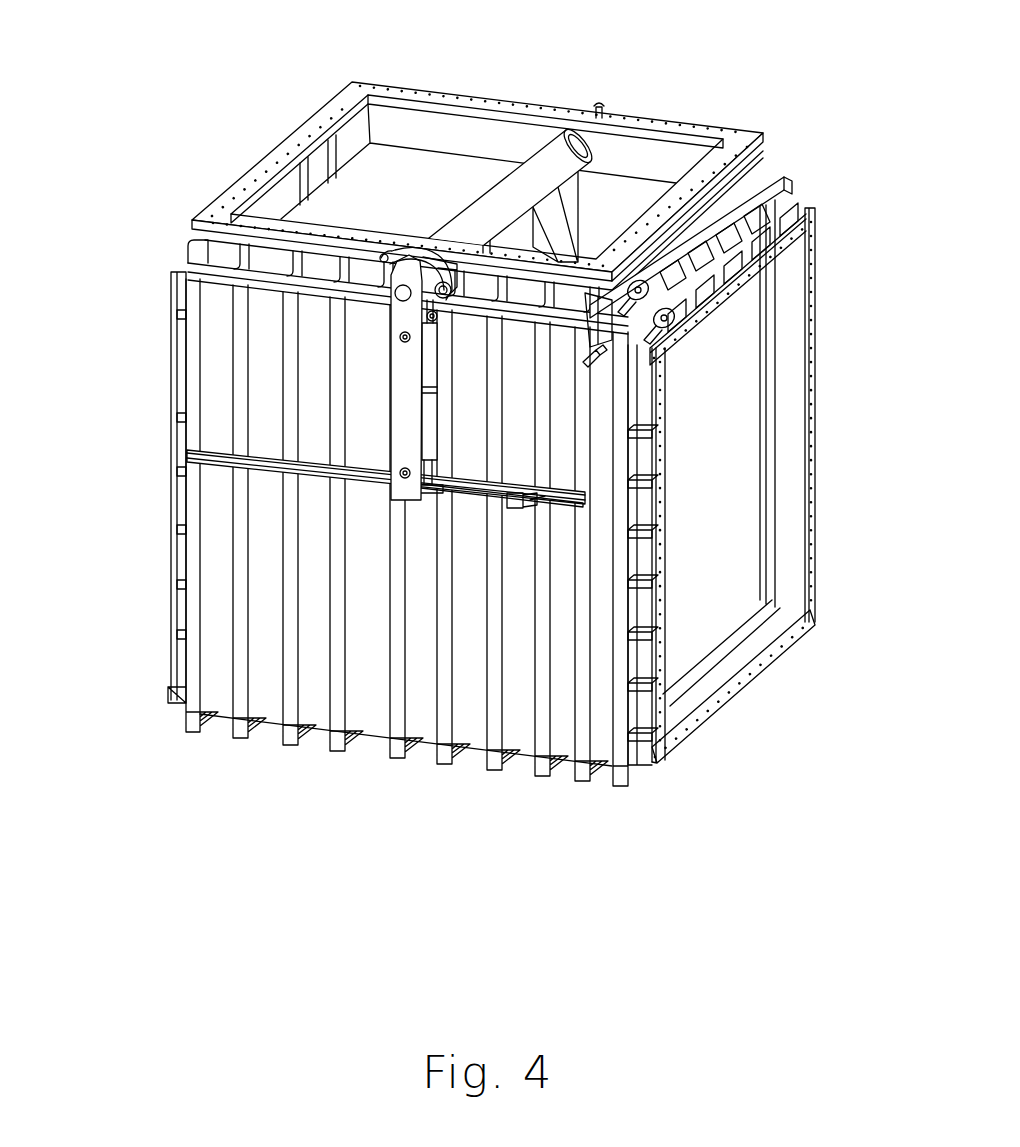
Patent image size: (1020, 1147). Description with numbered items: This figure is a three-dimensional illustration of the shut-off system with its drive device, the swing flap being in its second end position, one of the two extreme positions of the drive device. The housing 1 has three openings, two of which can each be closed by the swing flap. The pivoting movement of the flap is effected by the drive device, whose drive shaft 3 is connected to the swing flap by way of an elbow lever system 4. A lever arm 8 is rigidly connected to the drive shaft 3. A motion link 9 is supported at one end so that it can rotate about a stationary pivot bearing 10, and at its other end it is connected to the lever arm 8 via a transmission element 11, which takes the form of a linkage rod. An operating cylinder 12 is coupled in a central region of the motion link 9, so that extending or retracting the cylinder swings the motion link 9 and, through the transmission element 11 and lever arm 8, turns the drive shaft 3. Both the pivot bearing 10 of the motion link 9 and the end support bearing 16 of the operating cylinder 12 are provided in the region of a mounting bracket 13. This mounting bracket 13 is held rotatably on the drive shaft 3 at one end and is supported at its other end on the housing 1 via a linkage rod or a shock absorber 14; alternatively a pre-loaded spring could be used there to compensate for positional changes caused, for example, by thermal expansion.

The housing 1 is at (473, 703).
The drive shaft 3 is at (553, 150).
The elbow lever system 4 is at (553, 212).
The lever arm 8 is at (390, 262).
The motion link 9 is at (645, 345).
The pivot bearing 10 is at (401, 335).
The transmission element 11 is at (427, 255).
The operating cylinder 12 is at (428, 368).
The mounting bracket 13 is at (402, 412).
The linkage rod or shock absorber 14 is at (480, 498).
The end support bearing 16 is at (403, 478).